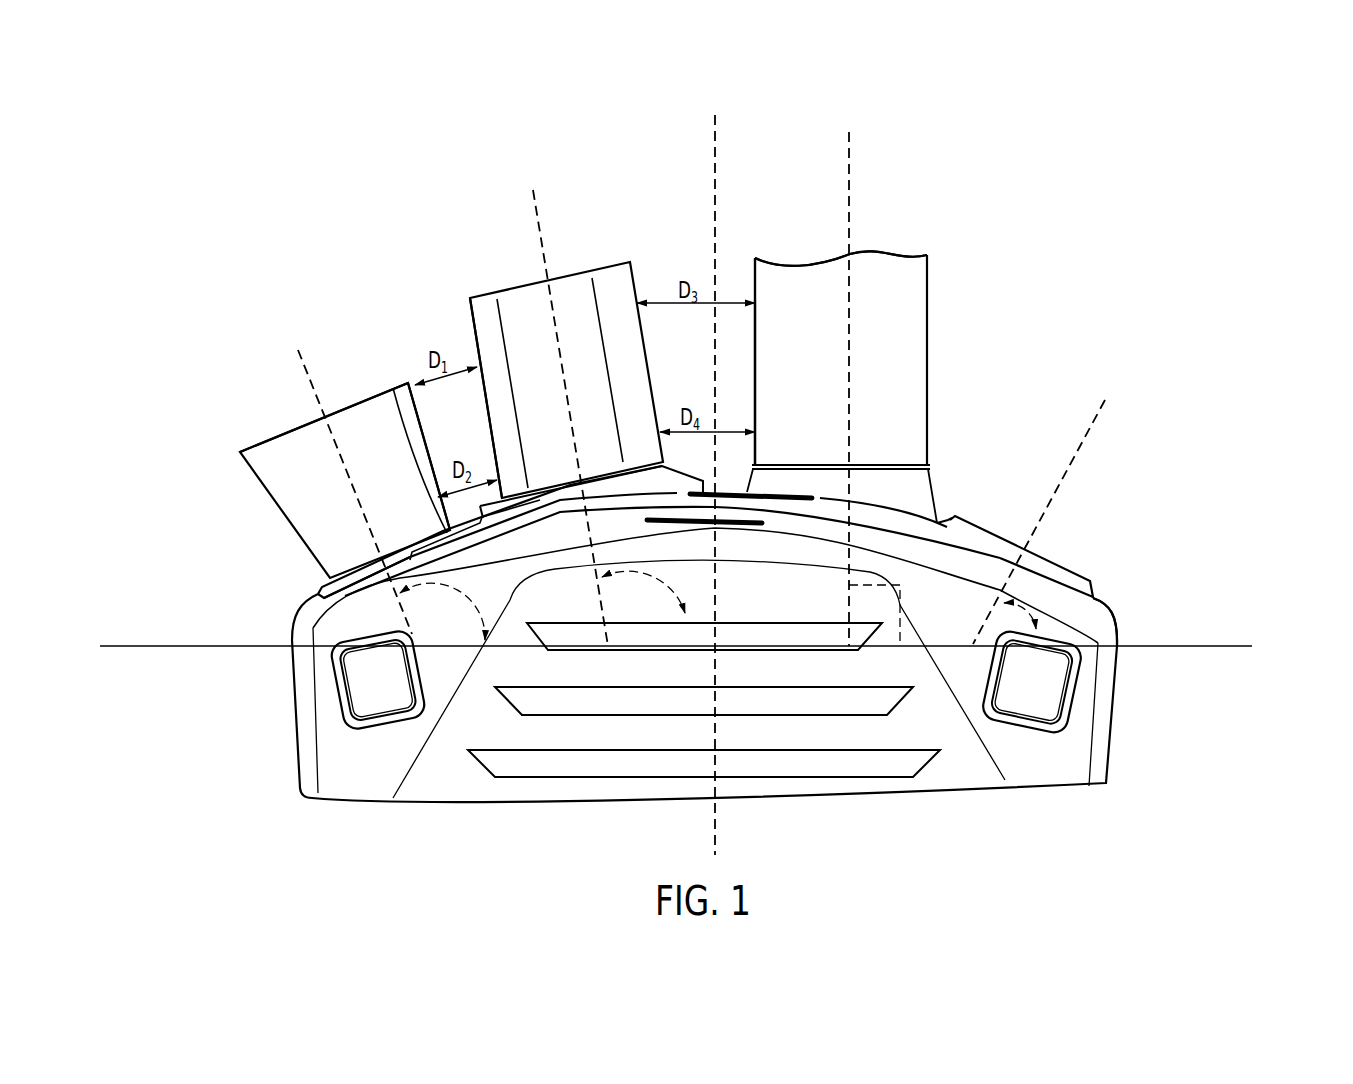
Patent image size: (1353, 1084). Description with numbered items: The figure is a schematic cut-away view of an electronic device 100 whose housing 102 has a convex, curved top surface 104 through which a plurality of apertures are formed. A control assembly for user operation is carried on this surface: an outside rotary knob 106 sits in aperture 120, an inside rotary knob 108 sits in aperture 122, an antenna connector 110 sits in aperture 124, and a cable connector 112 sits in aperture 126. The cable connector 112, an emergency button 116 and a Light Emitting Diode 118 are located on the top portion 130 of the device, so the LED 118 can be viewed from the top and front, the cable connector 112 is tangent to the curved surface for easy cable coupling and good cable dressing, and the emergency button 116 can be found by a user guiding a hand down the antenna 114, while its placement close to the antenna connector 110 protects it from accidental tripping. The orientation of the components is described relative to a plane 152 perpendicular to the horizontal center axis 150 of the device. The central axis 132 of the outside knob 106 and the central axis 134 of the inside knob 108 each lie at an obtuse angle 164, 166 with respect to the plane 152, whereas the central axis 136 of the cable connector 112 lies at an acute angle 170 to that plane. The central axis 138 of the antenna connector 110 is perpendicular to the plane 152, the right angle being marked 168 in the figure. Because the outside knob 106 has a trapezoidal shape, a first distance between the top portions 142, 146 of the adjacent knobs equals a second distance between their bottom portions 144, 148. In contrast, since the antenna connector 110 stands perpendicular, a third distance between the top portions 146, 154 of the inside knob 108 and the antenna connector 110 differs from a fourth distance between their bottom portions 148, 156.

The electronic device 100 is at (330, 228).
The housing 102 is at (292, 729).
The curved top surface 104 is at (802, 545).
The rotary knob 106 is at (233, 452).
The rotary knob 108 is at (507, 272).
The antenna connector 110 is at (932, 462).
The cable connector 112 is at (1090, 534).
The antenna 114 is at (910, 250).
The emergency button 116 is at (745, 502).
The Light Emitting Diode 118 is at (543, 508).
The aperture 120 is at (296, 543).
The aperture 122 is at (683, 502).
The aperture 124 is at (945, 512).
The aperture 126 is at (1106, 578).
The top portion 130 is at (1130, 305).
The central axis 132 is at (296, 361).
The central axis 134 is at (528, 204).
The central axis 136 is at (1108, 398).
The central axis 138 is at (846, 141).
The top portion 142 is at (378, 383).
The bottom portion 144 is at (415, 476).
The top portion 146 is at (471, 302).
The bottom portion 148 is at (488, 438).
The horizontal center axis 150 is at (712, 141).
The plane 152 is at (146, 642).
The top portion 154 is at (751, 247).
The bottom portion 156 is at (752, 386).
The obtuse angle 164 is at (478, 618).
The obtuse angle 166 is at (660, 592).
The right angle reference 168 is at (903, 592).
The acute angle 170 is at (1040, 612).